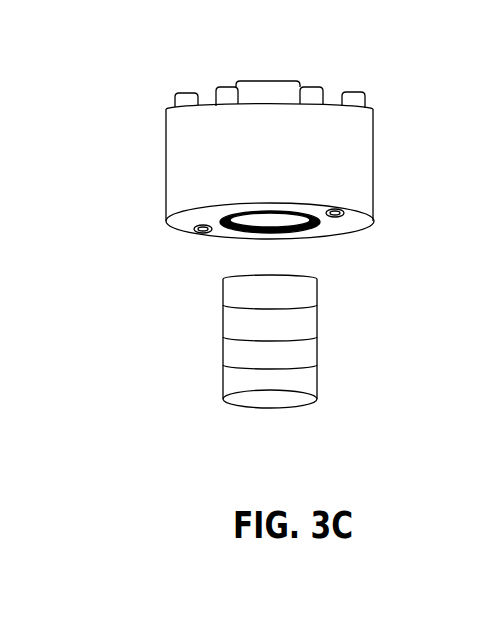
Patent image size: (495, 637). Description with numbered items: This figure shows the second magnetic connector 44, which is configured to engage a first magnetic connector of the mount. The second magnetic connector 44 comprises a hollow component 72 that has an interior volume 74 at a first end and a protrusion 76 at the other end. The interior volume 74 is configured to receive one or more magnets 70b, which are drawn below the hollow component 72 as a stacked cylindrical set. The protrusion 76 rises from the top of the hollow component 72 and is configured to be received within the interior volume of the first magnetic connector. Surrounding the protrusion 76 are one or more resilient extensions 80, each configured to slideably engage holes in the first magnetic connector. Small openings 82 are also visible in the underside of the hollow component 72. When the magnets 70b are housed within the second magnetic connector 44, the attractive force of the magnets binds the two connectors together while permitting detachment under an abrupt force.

The second magnetic connector 44 is at (267, 155).
The hollow component 72 is at (190, 180).
The protrusion 76 is at (275, 81).
The resilient extensions 80 is at (362, 98).
The interior volume 74 is at (284, 219).
The holes 82 is at (197, 230).
The magnets 70b is at (298, 347).